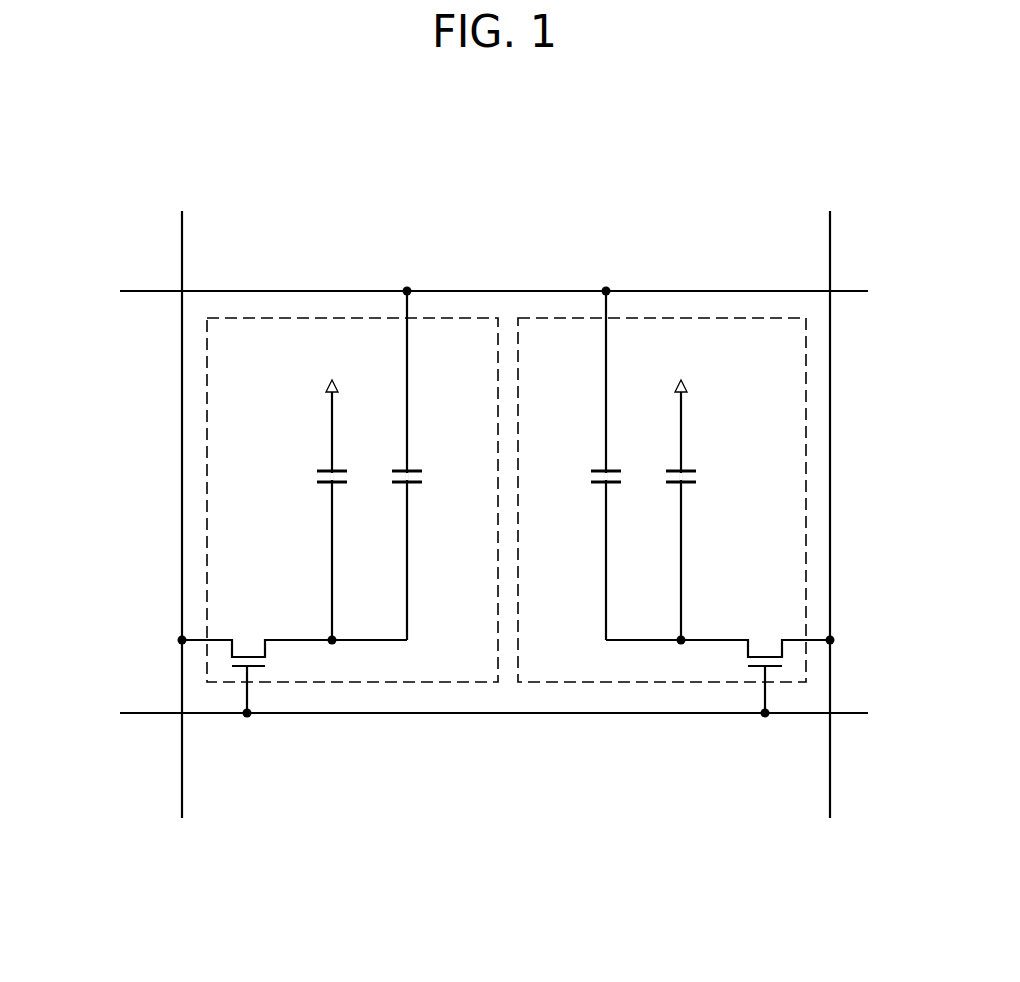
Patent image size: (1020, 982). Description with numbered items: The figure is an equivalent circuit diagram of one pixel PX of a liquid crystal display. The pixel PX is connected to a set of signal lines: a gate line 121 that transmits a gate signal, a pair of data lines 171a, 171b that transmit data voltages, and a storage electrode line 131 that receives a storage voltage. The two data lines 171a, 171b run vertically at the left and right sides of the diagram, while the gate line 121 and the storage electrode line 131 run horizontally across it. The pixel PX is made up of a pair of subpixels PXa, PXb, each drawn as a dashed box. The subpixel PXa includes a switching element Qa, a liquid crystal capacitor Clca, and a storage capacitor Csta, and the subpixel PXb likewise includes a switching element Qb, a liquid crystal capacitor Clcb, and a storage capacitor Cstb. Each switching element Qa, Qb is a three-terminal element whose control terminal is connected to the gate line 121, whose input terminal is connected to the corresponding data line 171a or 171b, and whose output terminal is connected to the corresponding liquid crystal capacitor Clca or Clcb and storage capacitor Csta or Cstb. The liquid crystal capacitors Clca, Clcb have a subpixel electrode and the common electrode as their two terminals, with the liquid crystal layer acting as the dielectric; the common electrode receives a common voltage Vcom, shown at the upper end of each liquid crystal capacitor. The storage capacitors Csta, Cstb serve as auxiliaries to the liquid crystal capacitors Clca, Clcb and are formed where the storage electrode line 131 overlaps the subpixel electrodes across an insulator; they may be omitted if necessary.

The storage electrode line 131 is at (473, 291).
The gate line 121 is at (473, 713).
The data line 171a is at (831, 497).
The data line 171b is at (184, 497).
The pixel PX is at (582, 777).
The subpixel PXa is at (555, 682).
The subpixel PXb is at (447, 682).
The switching element Qa is at (758, 663).
The switching element Qb is at (255, 663).
The liquid crystal capacitor Clca is at (706, 512).
The liquid crystal capacitor Clcb is at (307, 512).
The storage capacitor Csta is at (580, 464).
The storage capacitor Cstb is at (433, 464).
The common voltage Vcom is at (508, 364).